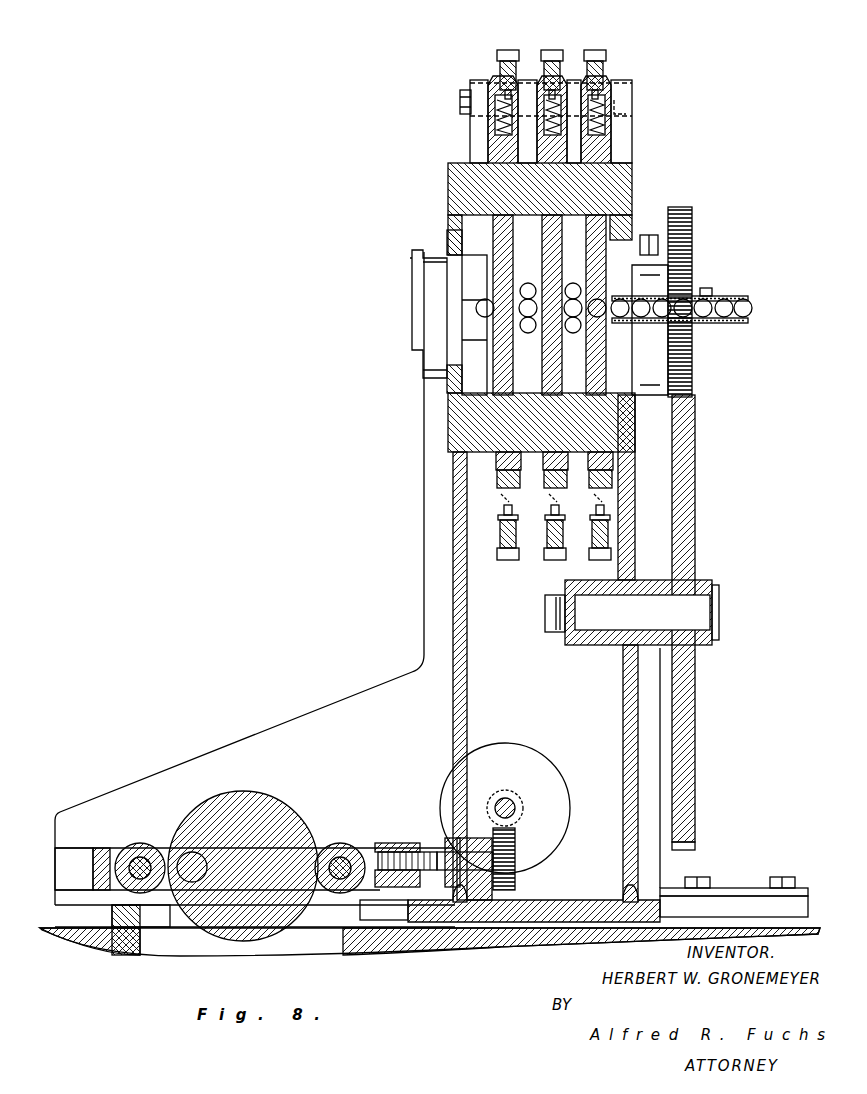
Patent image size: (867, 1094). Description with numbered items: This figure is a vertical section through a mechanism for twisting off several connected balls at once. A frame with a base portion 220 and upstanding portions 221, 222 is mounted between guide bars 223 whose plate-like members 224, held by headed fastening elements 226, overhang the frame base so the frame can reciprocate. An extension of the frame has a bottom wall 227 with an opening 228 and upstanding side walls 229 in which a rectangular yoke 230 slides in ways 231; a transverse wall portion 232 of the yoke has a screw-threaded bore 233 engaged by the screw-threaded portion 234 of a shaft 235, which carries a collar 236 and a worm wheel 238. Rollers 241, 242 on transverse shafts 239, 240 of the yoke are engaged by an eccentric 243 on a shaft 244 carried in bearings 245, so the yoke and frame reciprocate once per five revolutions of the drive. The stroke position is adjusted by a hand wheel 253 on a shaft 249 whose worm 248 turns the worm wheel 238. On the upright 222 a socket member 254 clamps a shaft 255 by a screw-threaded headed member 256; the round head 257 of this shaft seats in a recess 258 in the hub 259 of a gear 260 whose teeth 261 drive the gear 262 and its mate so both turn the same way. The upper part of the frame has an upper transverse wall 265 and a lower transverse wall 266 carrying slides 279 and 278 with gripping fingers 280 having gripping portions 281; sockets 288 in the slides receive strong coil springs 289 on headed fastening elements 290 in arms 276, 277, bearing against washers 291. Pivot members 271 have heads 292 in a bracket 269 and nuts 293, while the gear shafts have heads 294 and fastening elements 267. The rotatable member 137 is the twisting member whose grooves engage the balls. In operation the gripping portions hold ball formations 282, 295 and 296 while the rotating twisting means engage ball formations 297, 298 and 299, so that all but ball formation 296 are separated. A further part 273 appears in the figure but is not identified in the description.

The rotatable member 137 is at (493, 240).
The base portion 220 is at (612, 900).
The upstanding frame portion 221 is at (453, 716).
The upstanding frame portion 222 is at (623, 718).
The guide bars 223 is at (765, 905).
The plate-like members 224 is at (735, 888).
The headed fastening elements 226 is at (700, 877).
The bottom wall 227 is at (65, 945).
The opening 228 is at (128, 940).
The upstanding side walls 229 is at (172, 775).
The rectangular yoke 230 is at (100, 848).
The ways 231 is at (72, 860).
The transverse wall portion 232 is at (378, 848).
The screw-threaded bore 233 is at (385, 905).
The screw-threaded portion 234 is at (385, 850).
The shaft 235 is at (468, 850).
The collar 236 is at (448, 840).
The worm wheel 238 is at (516, 860).
The transverse shaft 239 is at (95, 935).
The transverse shaft 240 is at (335, 845).
The roller 241 is at (135, 860).
The roller 242 is at (320, 900).
The eccentric 243 is at (225, 782).
The shaft 244 is at (180, 855).
The bearings 245 is at (165, 920).
The worm 248 is at (523, 805).
The shaft 249 is at (515, 812).
The hand wheel 253 is at (498, 742).
The socket member 254 is at (590, 645).
The shaft 255 is at (712, 582).
The screw-threaded headed member 256 is at (545, 614).
The round head 257 is at (712, 615).
The recess 258 is at (715, 643).
The hub 259 is at (720, 600).
The gear 260 is at (696, 752).
The teeth 261 is at (697, 840).
The gear 262 is at (660, 247).
The upper transverse wall 265 is at (462, 186).
The lower transverse wall 266 is at (448, 440).
The screw-threaded headed fastening elements 267 is at (712, 290).
The brackets 269 is at (500, 78).
The pivot members 271 is at (626, 78).
The block 273 is at (470, 850).
The arm 276 is at (612, 530).
The arm 277 is at (500, 70).
The slides 278 is at (614, 458).
The slides 279 is at (490, 160).
The gripping fingers 280 is at (447, 240).
The gripping portions 281 is at (608, 235).
The ball formation 282 is at (470, 340).
The sockets 288 is at (608, 142).
The coil springs 289 is at (606, 110).
The screw-threaded headed fastening elements 290 is at (500, 52).
The washers 291 is at (498, 76).
The heads 292 is at (630, 112).
The nuts 293 is at (458, 99).
The heads 294 is at (422, 303).
The ball formation 295 is at (533, 338).
The ball formation 296 is at (680, 296).
The ball formation 297 is at (462, 318).
The ball formation 298 is at (478, 306).
The ball formation 299 is at (580, 338).